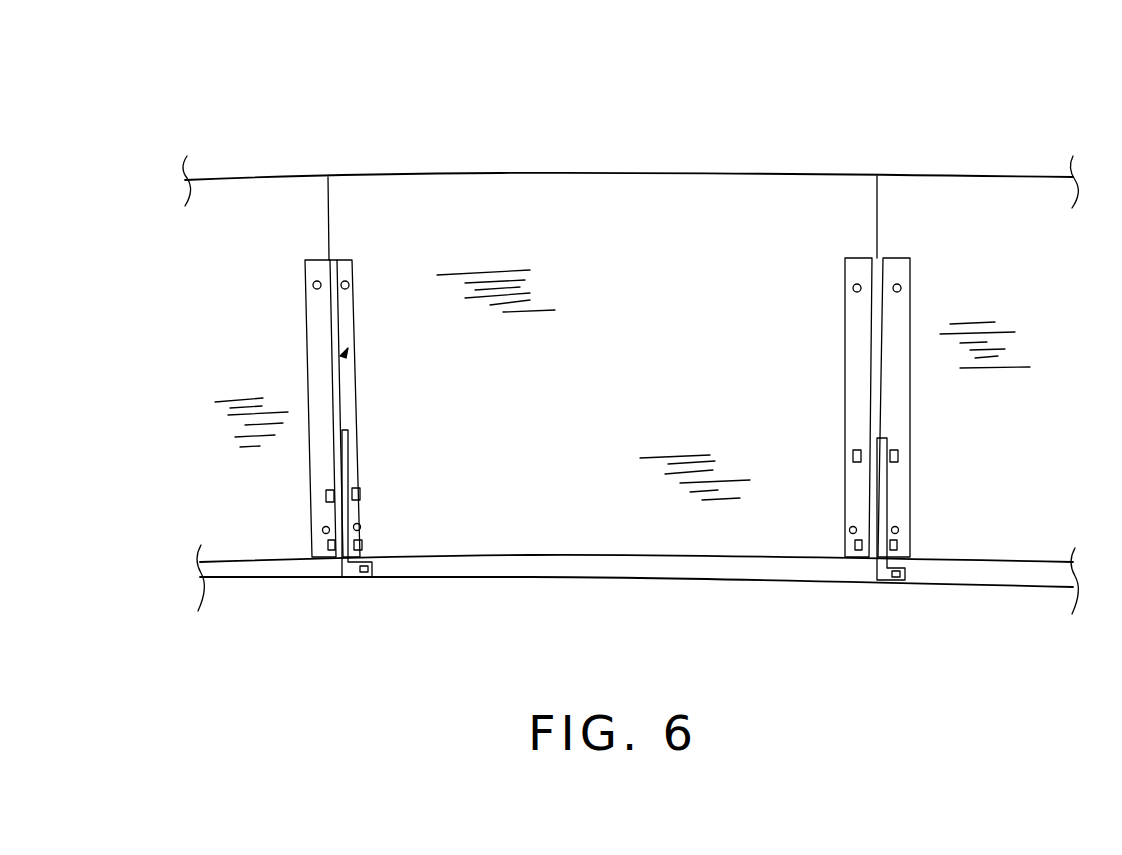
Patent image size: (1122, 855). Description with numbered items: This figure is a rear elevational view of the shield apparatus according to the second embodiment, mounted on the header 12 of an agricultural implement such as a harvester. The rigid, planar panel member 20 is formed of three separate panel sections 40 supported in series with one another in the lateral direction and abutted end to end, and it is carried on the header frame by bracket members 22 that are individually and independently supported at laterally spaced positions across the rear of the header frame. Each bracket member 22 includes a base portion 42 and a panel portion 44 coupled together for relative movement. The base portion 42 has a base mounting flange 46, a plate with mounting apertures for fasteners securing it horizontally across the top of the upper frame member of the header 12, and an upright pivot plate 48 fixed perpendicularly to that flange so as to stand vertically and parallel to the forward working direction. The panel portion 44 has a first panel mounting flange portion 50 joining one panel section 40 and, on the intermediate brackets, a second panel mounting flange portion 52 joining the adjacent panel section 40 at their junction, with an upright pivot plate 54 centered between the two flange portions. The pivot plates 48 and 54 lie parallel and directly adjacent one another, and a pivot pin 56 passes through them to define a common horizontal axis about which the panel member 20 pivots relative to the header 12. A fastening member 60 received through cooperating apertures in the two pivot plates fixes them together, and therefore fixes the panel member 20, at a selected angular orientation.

The header 12 is at (445, 578).
The panel member 20 is at (640, 173).
The bracket member 22 is at (335, 242).
The panel section 40 is at (254, 188).
The base portion 42 is at (364, 510).
The panel portion 44 is at (348, 350).
The base mounting flange 46 is at (365, 580).
The upright pivot plate 48 is at (353, 460).
The first panel mounting flange portion 50 is at (363, 383).
The second panel mounting flange portion 52 is at (310, 322).
The upright pivot plate 54 is at (337, 368).
The pivot pin 56 is at (333, 565).
The fastening member 60 is at (328, 495).